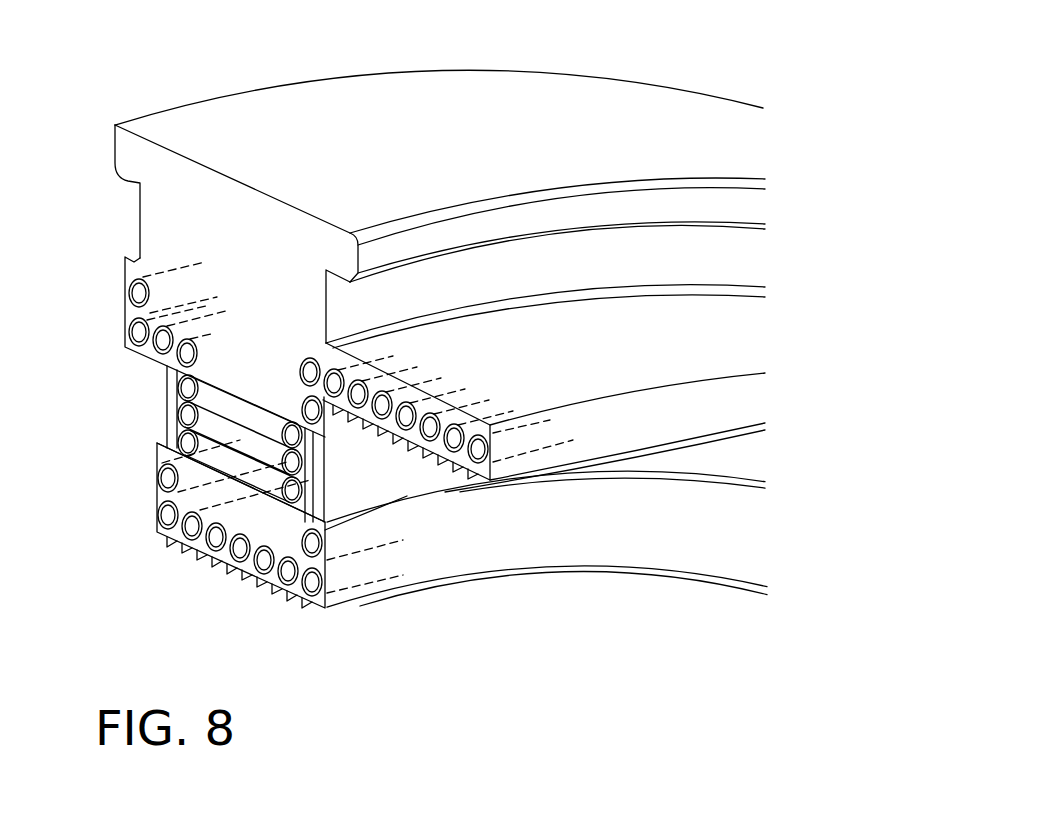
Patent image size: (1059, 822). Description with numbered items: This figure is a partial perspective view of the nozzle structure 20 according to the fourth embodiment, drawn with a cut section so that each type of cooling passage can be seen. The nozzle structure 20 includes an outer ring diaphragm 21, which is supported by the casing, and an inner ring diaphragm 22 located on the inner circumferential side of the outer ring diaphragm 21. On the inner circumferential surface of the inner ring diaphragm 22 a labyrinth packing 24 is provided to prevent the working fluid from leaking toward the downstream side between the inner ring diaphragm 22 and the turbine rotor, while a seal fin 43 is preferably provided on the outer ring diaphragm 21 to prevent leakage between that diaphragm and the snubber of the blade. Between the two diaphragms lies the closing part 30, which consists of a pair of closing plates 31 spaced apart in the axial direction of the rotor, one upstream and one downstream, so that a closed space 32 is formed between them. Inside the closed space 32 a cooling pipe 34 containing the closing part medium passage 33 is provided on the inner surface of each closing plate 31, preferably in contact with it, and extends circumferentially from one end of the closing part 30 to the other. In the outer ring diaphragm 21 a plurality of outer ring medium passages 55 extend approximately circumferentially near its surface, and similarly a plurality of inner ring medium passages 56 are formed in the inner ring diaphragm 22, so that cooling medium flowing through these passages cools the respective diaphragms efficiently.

The nozzle structure 20 is at (406, 333).
The outer ring diaphragm 21 is at (262, 114).
The inner ring diaphragm 22 is at (567, 537).
The labyrinth packing 24 is at (300, 617).
The closing part 30 is at (408, 496).
The closing plate 31 is at (168, 412).
The closed space 32 is at (237, 468).
The closing part medium passage 33 is at (235, 418).
The cooling pipe 34 is at (266, 478).
The seal fin 43 is at (472, 487).
The outer ring medium passage 55 is at (294, 438).
The inner ring medium passage 56 is at (207, 568).